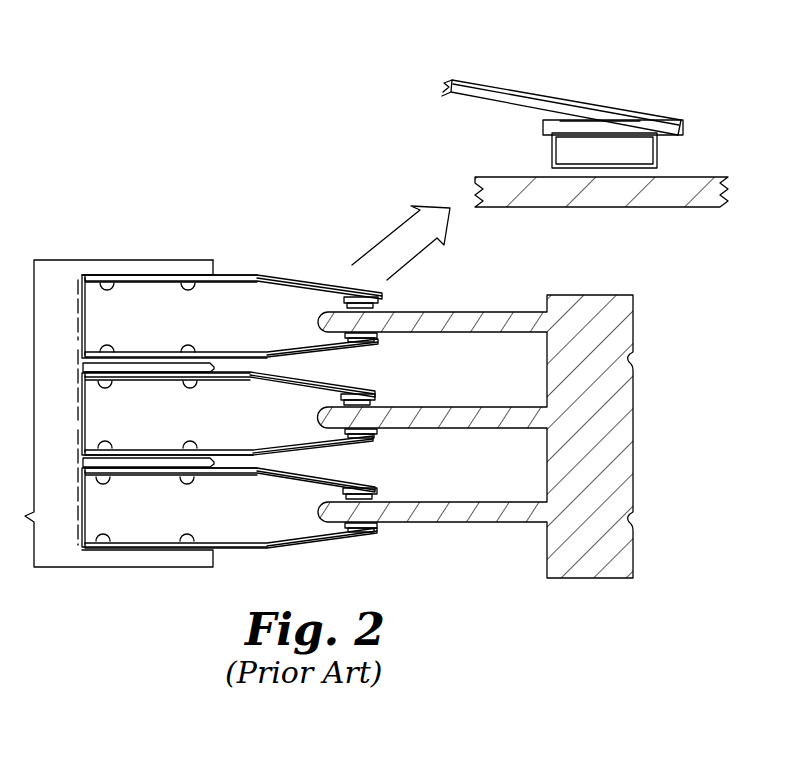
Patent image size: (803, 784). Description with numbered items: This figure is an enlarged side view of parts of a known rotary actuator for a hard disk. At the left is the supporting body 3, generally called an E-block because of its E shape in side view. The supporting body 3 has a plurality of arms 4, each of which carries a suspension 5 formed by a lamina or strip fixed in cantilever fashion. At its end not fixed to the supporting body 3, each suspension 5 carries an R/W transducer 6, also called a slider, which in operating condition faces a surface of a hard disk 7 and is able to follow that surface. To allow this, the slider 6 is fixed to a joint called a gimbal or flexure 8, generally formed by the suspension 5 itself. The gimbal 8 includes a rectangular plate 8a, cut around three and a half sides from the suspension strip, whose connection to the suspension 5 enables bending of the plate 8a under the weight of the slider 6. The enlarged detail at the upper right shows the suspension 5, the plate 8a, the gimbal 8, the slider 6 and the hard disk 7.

The supporting body 3 is at (58, 252).
The arm 4 is at (143, 270).
The suspension 5 is at (306, 279).
The R/W transducer 6 is at (340, 300).
The hard disk 7 is at (480, 312).
The gimbal 8 is at (386, 292).
The rectangular plate 8a is at (593, 127).